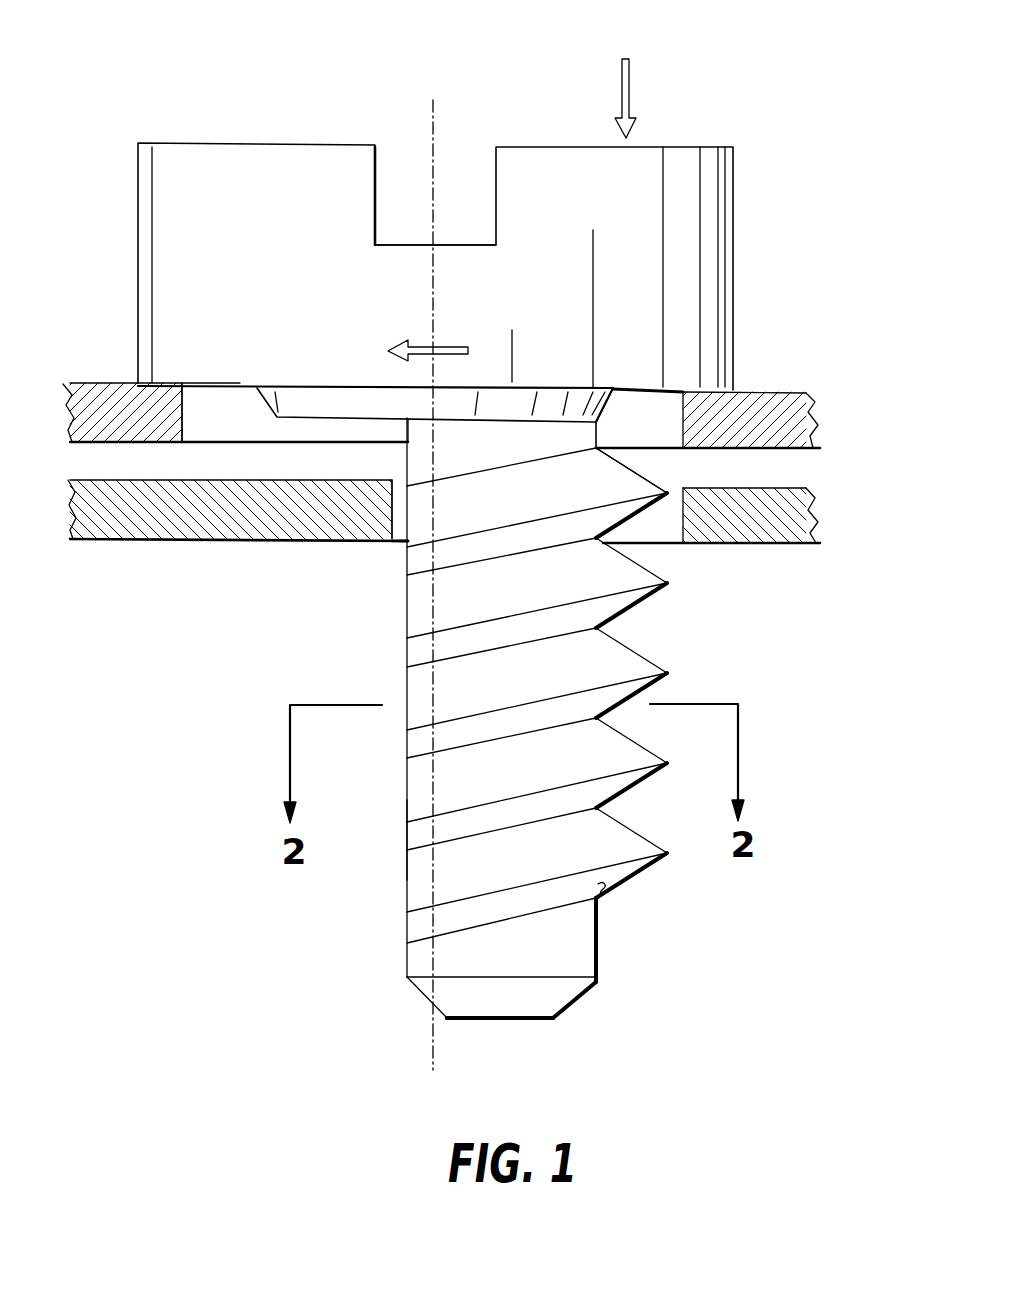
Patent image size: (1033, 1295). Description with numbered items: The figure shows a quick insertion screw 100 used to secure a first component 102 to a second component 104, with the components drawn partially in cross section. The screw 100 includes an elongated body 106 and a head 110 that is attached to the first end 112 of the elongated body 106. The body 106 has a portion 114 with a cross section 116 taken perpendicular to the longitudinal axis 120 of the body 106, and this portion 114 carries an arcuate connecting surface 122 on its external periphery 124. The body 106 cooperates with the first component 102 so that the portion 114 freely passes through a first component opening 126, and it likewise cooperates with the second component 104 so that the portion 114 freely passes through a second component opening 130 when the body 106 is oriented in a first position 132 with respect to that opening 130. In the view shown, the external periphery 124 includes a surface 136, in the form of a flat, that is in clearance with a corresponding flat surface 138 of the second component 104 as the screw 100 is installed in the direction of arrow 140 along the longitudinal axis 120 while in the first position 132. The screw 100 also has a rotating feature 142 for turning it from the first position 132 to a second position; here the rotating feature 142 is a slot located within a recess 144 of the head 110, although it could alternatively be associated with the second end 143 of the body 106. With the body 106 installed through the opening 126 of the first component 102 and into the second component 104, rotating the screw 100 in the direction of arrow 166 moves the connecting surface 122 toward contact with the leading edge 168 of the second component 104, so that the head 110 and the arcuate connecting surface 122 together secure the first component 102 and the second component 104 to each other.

The insertion screw 100 is at (760, 108).
The first component 102 is at (822, 400).
The second component 104 is at (807, 515).
The elongated body 106 is at (376, 645).
The head 110 is at (138, 141).
The first end 112 is at (577, 387).
The portion of the body 114 is at (643, 654).
The cross section 116 is at (423, 697).
The longitudinal axis 120 is at (430, 138).
The arcuate connecting surface 122 is at (637, 472).
The external periphery 124 is at (600, 900).
The first component opening 126 is at (245, 416).
The second component opening 130 is at (403, 555).
The first position 132 is at (386, 947).
The surface of the body 136 is at (405, 840).
The surface of the second component 138 is at (400, 490).
The arrow 140 is at (630, 98).
The rotating feature 142 is at (378, 158).
The second end 143 is at (530, 1020).
The recess 144 is at (465, 158).
The arrow 166 is at (445, 348).
The leading edge 168 is at (402, 543).